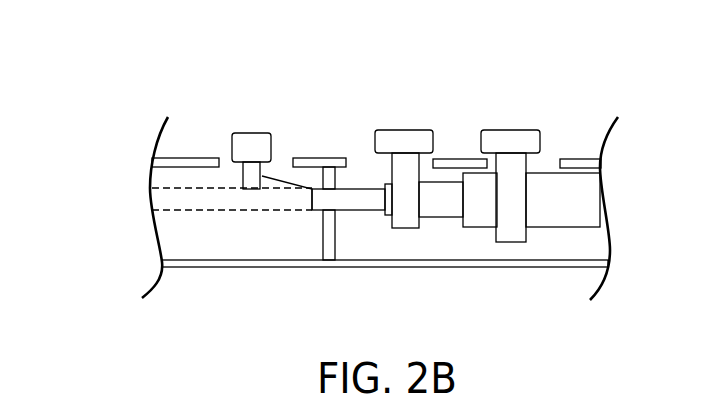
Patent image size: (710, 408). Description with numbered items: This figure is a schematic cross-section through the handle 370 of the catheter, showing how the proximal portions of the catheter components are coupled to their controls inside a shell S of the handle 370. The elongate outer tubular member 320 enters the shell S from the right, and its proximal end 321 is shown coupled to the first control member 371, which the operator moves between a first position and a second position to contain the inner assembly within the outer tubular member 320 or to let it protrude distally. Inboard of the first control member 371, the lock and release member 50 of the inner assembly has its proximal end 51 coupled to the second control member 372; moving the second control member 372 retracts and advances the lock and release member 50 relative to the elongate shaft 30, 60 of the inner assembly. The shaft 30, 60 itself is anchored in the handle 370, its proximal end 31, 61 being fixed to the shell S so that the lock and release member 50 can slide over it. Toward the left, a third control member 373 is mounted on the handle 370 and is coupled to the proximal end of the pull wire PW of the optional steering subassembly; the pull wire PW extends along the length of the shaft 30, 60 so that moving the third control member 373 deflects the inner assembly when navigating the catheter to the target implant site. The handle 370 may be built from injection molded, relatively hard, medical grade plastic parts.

The handle 370 is at (238, 55).
The third control member 373 is at (245, 140).
The pull wire PW is at (277, 177).
The shell S is at (173, 165).
The proximal end 31 is at (304, 255).
The proximal end 61 is at (322, 202).
The elongate shaft 30 is at (380, 241).
The elongate shaft 60 is at (347, 217).
The second control member 372 is at (397, 140).
The proximal end 51 is at (449, 209).
The lock and release member 50 is at (448, 231).
The first control member 371 is at (500, 140).
The proximal end 321 is at (562, 209).
The elongate outer tubular member 320 is at (579, 229).